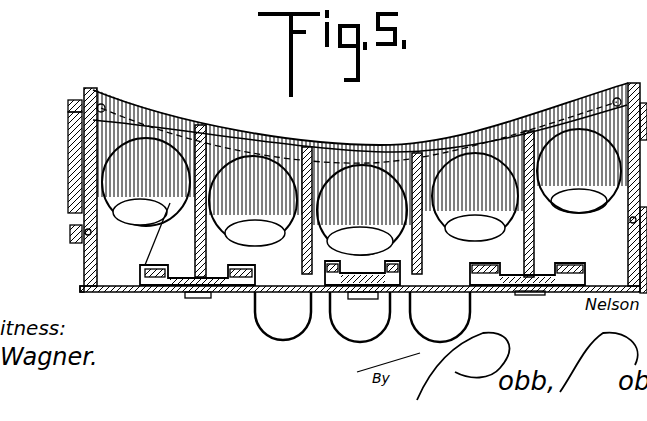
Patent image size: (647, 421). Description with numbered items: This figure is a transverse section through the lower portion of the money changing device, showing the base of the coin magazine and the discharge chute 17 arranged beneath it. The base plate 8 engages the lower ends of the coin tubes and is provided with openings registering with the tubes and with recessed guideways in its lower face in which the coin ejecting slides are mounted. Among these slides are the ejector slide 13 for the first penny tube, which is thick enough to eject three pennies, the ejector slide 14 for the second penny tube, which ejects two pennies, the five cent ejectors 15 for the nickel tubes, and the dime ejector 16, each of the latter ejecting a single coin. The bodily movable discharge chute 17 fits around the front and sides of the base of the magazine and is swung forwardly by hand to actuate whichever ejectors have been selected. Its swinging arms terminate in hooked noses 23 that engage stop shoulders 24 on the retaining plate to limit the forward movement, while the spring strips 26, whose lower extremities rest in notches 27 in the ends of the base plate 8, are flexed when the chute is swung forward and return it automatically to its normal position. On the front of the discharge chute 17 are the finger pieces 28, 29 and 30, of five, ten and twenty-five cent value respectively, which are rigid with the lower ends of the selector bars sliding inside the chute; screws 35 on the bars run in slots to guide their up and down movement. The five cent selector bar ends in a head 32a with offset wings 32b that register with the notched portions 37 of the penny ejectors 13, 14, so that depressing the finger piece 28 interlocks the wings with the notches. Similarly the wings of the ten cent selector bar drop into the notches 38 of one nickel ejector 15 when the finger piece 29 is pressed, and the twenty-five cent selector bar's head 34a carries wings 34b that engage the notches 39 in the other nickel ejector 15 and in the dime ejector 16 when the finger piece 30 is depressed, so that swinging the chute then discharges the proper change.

The hooked nose 23 is at (70, 111).
The stop shoulder 24 is at (80, 205).
The spring strip 26 is at (77, 240).
The notch 27 is at (80, 279).
The discharge chute 17 is at (130, 286).
The ejector slide 13 is at (167, 130).
The ejector slide 14 is at (230, 137).
The base plate 8 is at (302, 143).
The five cent ejector 15 is at (443, 130).
The dime ejector 16 is at (557, 127).
The notched portion 37 is at (255, 257).
The notch 38 is at (360, 241).
The notch 39 is at (490, 262).
The wing 32b is at (163, 291).
The head 32a is at (223, 291).
The wing 34b is at (480, 292).
The head 34a is at (560, 292).
The screw 35 is at (482, 296).
The finger piece 28 is at (277, 342).
The finger piece 29 is at (357, 342).
The finger piece 30 is at (405, 348).